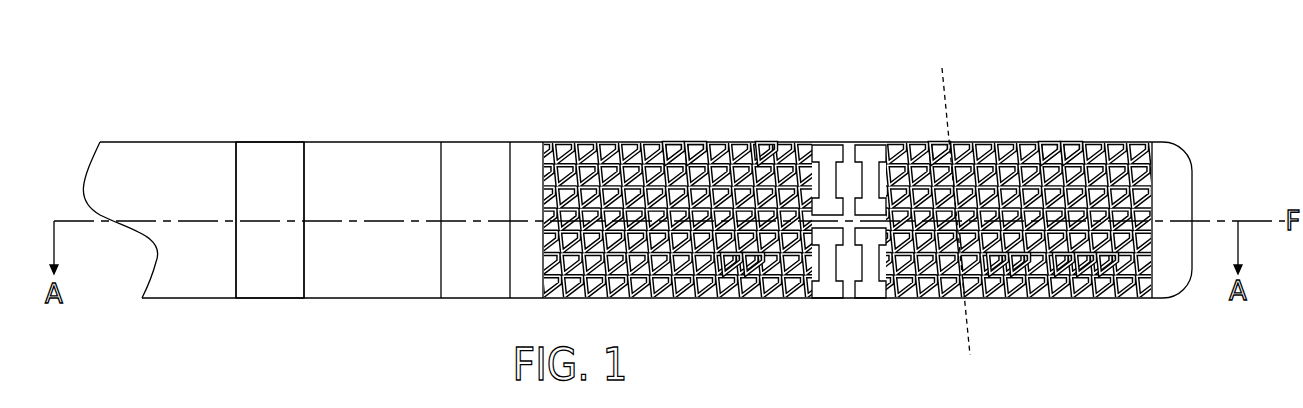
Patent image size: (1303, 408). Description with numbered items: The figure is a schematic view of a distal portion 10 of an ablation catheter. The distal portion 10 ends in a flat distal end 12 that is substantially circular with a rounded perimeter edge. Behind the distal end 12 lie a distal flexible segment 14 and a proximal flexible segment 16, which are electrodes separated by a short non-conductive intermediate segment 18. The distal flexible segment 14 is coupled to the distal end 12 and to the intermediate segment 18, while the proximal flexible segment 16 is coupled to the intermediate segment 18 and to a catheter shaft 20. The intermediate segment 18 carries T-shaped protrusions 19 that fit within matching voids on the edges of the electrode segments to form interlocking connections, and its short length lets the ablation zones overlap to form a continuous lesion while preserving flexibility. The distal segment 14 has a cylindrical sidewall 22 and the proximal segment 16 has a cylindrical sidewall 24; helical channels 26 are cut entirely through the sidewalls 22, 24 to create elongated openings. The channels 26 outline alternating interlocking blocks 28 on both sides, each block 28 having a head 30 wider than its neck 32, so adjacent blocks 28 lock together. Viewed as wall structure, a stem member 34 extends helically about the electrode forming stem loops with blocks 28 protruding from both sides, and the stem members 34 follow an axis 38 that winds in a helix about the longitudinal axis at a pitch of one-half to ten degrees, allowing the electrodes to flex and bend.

The distal portion 10 is at (123, 83).
The flat distal end 12 is at (1192, 182).
The distal flexible segment 14 is at (1012, 117).
The proximal flexible segment 16 is at (675, 110).
The intermediate segment 18 is at (838, 110).
The T-shaped protrusions 19 is at (872, 247).
The catheter shaft 20 is at (357, 142).
The cylindrical sidewall 22 is at (1055, 148).
The cylindrical sidewall 24 is at (763, 148).
The channels 26 is at (703, 148).
The blocks 28 is at (997, 262).
The head 30 is at (733, 262).
The neck 32 is at (743, 265).
The stem member 34 is at (668, 148).
The axis 38 is at (968, 330).